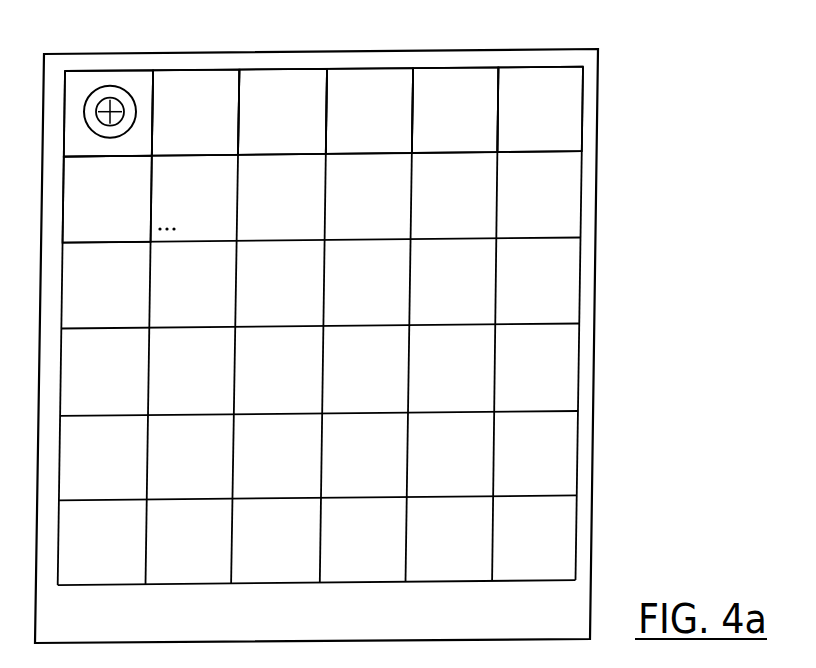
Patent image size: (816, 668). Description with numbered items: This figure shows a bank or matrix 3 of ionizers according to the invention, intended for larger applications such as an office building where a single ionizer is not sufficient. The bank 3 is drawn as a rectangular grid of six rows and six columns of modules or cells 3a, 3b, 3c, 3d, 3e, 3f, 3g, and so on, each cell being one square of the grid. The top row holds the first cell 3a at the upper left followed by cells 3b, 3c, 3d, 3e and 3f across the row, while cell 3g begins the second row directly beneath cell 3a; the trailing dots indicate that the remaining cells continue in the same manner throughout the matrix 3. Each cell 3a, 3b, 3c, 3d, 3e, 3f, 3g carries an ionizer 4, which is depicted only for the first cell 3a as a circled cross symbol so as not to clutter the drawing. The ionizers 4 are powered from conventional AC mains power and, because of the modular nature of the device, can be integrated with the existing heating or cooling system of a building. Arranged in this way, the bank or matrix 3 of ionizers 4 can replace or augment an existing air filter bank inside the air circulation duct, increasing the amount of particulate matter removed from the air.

The bank or matrix 3 is at (382, 68).
The cell 3a is at (112, 149).
The cell 3b is at (225, 148).
The cell 3c is at (315, 149).
The cell 3d is at (403, 149).
The cell 3e is at (489, 149).
The cell 3f is at (566, 149).
The cell 3g is at (137, 237).
The ionizer 4 is at (113, 87).